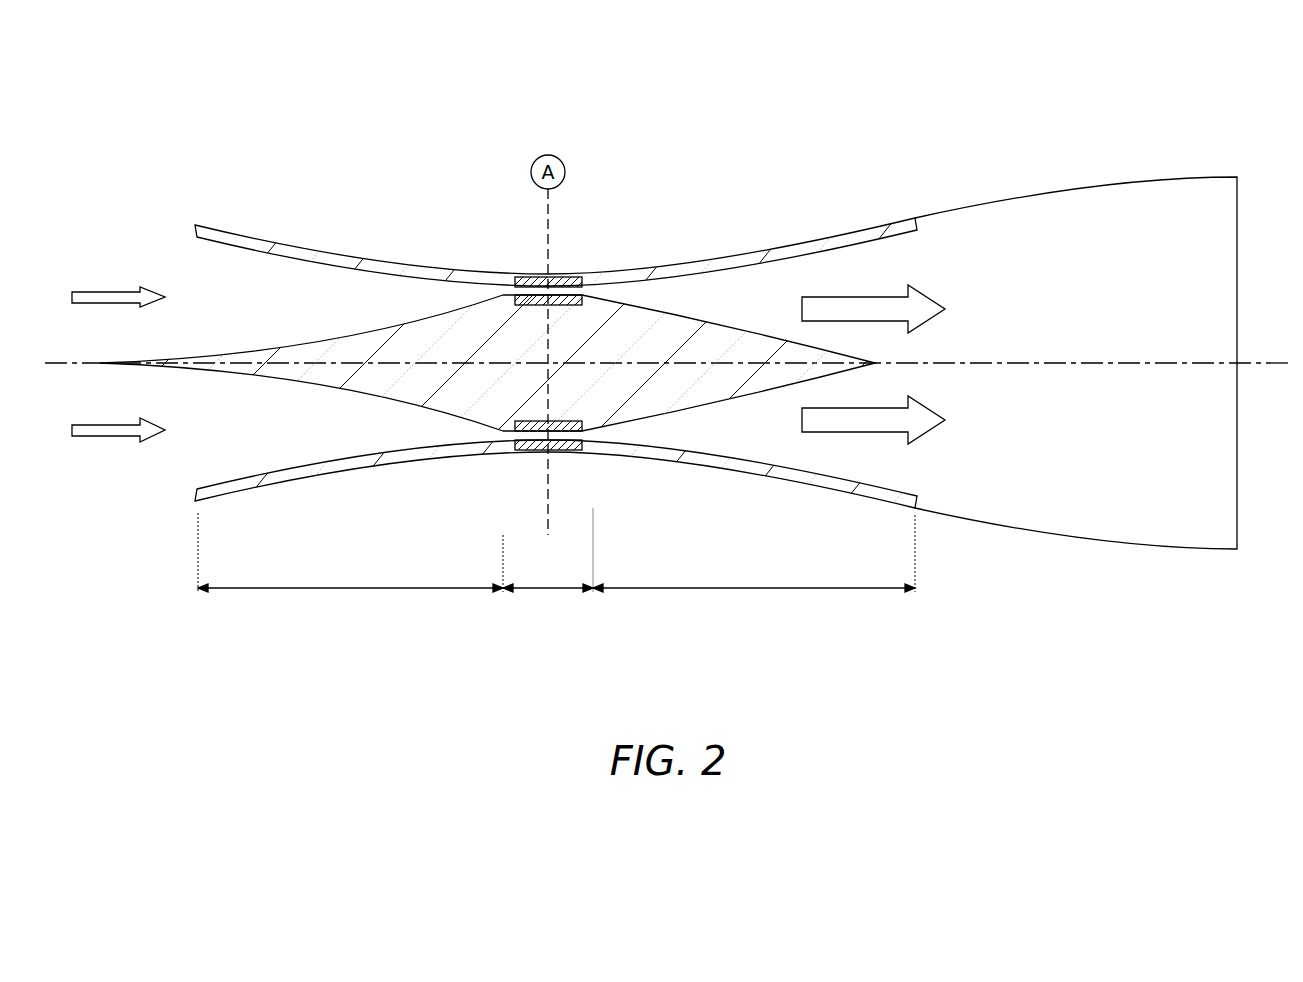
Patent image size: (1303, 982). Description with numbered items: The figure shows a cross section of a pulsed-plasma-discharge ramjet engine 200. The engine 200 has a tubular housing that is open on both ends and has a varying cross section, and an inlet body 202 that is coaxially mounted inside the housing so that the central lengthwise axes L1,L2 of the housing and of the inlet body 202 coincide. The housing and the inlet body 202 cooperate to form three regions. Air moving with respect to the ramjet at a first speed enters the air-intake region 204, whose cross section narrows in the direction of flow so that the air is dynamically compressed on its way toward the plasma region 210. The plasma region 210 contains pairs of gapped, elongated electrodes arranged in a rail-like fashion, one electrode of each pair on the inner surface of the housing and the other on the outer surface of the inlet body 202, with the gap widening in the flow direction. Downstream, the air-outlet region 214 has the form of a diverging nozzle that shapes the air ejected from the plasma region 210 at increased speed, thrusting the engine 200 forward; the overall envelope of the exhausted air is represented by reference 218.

The engine 200 is at (137, 144).
The inlet body 202 is at (318, 352).
The air-intake region 204 is at (353, 620).
The plasma region 210 is at (551, 648).
The air-outlet region 214 is at (756, 620).
The envelope of exhausted air 218 is at (1207, 552).
The central lengthwise axes L1,L2 is at (1175, 361).